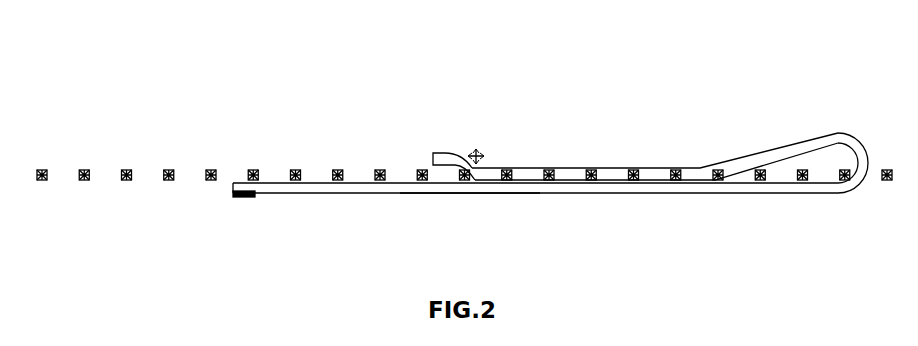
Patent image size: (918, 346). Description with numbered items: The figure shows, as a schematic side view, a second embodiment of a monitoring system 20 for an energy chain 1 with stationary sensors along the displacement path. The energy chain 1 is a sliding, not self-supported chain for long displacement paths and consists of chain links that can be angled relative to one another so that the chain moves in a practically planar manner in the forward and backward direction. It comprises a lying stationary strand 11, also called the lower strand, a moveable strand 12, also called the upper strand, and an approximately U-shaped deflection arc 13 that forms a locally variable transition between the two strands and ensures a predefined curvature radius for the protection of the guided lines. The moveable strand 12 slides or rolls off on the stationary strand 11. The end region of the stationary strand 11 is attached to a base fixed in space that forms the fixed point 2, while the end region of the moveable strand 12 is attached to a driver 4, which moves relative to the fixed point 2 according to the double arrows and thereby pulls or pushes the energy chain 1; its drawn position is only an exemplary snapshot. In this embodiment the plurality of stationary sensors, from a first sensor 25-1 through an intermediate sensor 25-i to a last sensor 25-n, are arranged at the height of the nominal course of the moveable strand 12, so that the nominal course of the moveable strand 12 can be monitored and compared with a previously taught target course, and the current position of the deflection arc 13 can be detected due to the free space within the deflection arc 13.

The monitoring system 20 is at (248, 67).
The energy chain 1 is at (532, 187).
The fixed point 2 is at (250, 190).
The driver 4 is at (438, 150).
The stationary strand 11 is at (468, 198).
The moveable strand 12 is at (572, 167).
The deflection arc 13 is at (843, 127).
The stationary sensor 25-1 is at (42, 170).
The stationary sensor 25-i is at (211, 170).
The stationary sensor 25-n is at (883, 180).